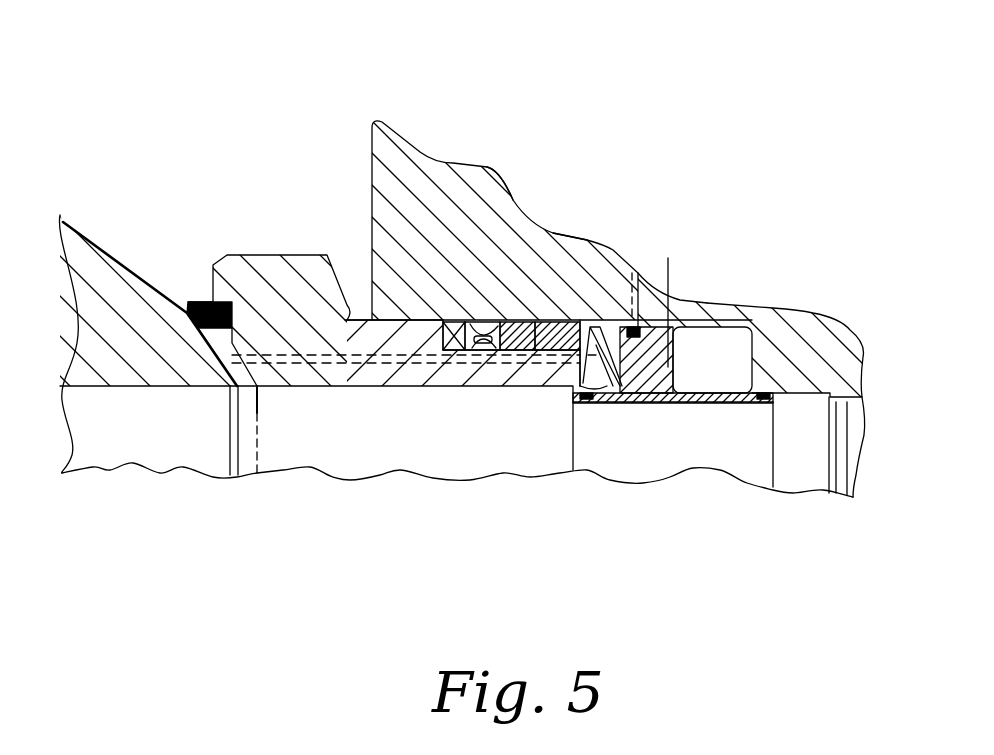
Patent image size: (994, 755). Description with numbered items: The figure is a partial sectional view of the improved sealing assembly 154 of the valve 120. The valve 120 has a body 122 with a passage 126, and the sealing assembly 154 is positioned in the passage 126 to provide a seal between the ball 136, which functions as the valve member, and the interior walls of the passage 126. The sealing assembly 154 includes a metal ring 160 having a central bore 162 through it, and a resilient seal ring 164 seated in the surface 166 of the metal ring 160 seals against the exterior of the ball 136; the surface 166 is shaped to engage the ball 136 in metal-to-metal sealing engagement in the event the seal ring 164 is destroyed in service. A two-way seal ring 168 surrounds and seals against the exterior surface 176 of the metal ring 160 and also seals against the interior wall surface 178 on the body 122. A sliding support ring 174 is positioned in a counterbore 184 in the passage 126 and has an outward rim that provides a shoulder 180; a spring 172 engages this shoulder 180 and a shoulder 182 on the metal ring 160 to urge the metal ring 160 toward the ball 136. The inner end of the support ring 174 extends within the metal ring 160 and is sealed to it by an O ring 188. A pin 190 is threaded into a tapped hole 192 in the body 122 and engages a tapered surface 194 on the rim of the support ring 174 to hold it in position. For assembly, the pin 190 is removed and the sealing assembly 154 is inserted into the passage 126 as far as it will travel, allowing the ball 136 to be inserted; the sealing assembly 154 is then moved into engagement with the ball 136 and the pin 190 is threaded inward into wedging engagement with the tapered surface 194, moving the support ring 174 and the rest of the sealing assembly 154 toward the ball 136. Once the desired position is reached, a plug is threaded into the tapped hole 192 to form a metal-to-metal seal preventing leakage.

The valve 120 is at (575, 325).
The body 122 is at (505, 170).
The passage 126 is at (843, 487).
The ball 136 is at (118, 250).
The sealing assembly 154 is at (668, 152).
The metal ring 160 is at (277, 255).
The central bore 162 is at (327, 388).
The resilient seal ring 164 is at (190, 332).
The surface 166 is at (213, 338).
The two-way seal ring 168 is at (530, 320).
The spring 172 is at (600, 325).
The sliding support ring 174 is at (616, 386).
The exterior surface 176 is at (468, 320).
The interior wall surface 178 is at (433, 327).
The shoulder 180 is at (582, 398).
The shoulder 182 is at (632, 328).
The counterbore 184 is at (798, 402).
The O ring 188 is at (565, 352).
The pin 190 is at (672, 363).
The tapped hole 192 is at (658, 278).
The tapered surface 194 is at (680, 380).